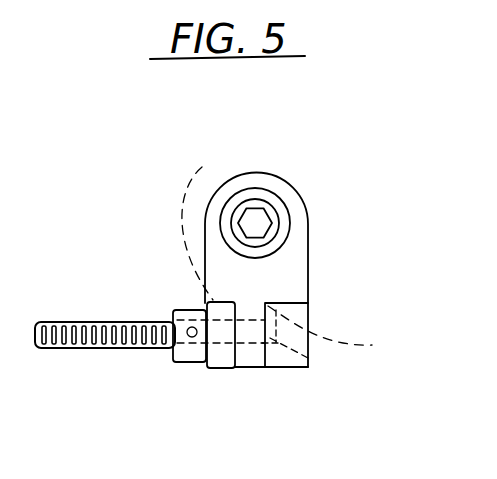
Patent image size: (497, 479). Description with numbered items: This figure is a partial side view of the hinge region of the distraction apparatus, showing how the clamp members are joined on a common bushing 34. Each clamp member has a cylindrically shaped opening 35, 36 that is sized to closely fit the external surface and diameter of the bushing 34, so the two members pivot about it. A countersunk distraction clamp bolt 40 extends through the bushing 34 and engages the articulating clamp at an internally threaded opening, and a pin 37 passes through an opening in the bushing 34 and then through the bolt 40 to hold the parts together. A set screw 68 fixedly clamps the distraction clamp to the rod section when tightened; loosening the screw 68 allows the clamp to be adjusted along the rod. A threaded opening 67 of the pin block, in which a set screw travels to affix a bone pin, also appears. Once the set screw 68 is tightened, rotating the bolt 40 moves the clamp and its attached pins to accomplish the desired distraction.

The bushing 34 is at (177, 308).
The opening 35 is at (295, 250).
The opening 36 is at (258, 298).
The pin 37 is at (192, 337).
The distraction clamp bolt 40 is at (165, 347).
The threaded opening 67 is at (257, 350).
The set screw 68 is at (266, 211).